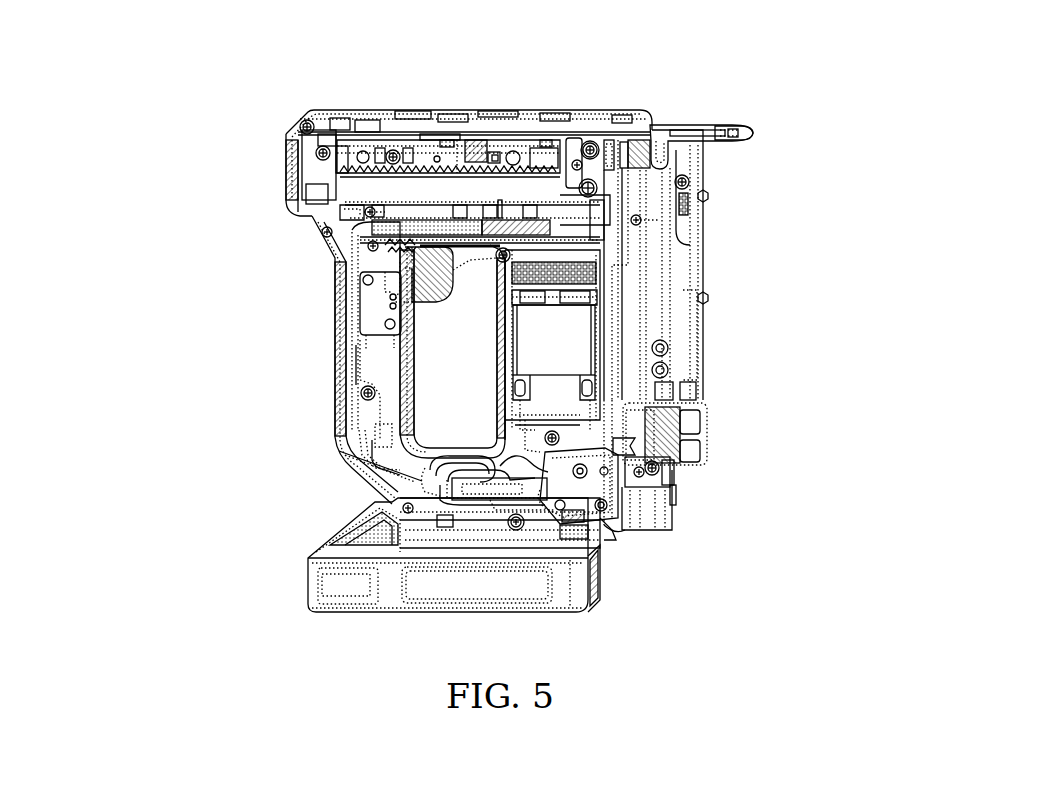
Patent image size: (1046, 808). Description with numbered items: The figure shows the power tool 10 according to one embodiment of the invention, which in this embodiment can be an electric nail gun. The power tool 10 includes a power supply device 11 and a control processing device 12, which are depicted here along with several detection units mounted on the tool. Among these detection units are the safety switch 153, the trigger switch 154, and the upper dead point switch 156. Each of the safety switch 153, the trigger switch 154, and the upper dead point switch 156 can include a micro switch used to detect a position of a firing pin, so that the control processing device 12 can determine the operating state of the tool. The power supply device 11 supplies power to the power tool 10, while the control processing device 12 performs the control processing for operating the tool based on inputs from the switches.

The power tool 10 is at (556, 93).
The power supply device 11 is at (330, 593).
The control processing device 12 is at (535, 482).
The safety switch 153 is at (752, 135).
The trigger switch 154 is at (378, 318).
The upper dead point switch 156 is at (335, 207).